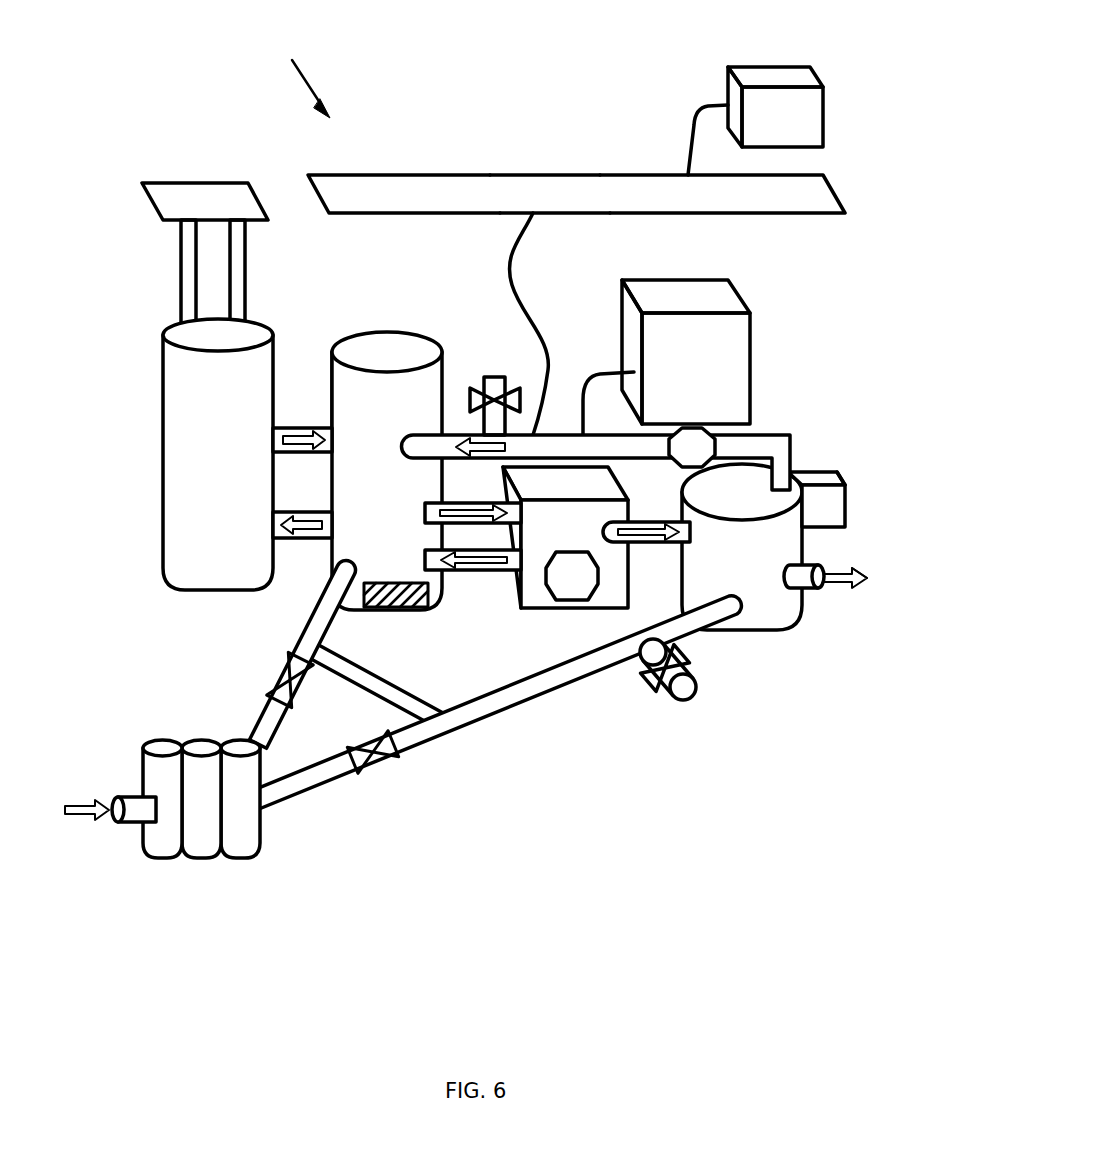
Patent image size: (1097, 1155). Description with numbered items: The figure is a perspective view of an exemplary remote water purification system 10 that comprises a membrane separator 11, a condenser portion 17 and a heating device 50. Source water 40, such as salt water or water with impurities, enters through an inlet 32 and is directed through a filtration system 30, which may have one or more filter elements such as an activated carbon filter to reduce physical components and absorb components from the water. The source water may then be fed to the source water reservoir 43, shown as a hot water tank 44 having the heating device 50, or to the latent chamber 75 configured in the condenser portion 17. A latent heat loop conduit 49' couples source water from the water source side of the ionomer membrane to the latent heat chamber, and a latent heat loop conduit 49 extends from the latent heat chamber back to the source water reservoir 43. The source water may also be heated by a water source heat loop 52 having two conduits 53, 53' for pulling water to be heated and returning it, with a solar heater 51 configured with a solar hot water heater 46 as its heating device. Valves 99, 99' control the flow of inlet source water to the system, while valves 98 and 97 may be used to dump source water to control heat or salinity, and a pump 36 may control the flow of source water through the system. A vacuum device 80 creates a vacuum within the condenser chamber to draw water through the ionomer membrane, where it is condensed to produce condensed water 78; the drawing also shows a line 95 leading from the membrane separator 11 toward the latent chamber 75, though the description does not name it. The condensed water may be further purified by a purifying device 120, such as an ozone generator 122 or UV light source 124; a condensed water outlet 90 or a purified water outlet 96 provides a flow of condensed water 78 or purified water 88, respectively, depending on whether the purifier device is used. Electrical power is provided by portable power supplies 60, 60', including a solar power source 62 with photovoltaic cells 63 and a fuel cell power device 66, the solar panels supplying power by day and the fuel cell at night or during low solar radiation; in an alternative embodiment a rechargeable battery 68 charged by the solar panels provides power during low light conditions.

The water purification system 10 is at (301, 75).
The rechargeable battery 68 is at (765, 78).
The portable power supply 60 is at (404, 165).
The solar power source 62 is at (560, 185).
The photovoltaic cells 63 is at (645, 185).
The solar heater 51 is at (170, 190).
The heating device 50 is at (205, 185).
The solar hot water heater 46 is at (172, 405).
The water source heat loop 52 is at (296, 372).
The conduit 53 is at (302, 408).
The conduit 53' is at (302, 497).
The source water reservoir 43 is at (393, 348).
The hot water tank 44 is at (432, 340).
The fuel cell power device 66 is at (680, 300).
The portable power supply 60' is at (666, 335).
The latent chamber 75 is at (795, 625).
The purifying device 120 is at (818, 474).
The UV light source 124 is at (847, 470).
The ozone generator 122 is at (842, 502).
The latent heat loop conduit 49 is at (609, 434).
The valve 97 is at (524, 395).
The pump 36 is at (690, 445).
The membrane separator 11 is at (518, 582).
The vacuum device 80 is at (580, 582).
The conduit 95 is at (665, 524).
The condensed water outlet 90 is at (805, 575).
The condensed water 78 is at (840, 572).
The purified water outlet 96 is at (825, 588).
The purified water 88 is at (870, 578).
The latent heat loop conduit 49' is at (390, 686).
The condenser portion 17 is at (747, 628).
The valve 99' is at (407, 763).
The valve 98 is at (642, 692).
The valve 99 is at (282, 654).
The filtration system 30 is at (205, 848).
The inlet 32 is at (130, 800).
The source water 40 is at (90, 803).